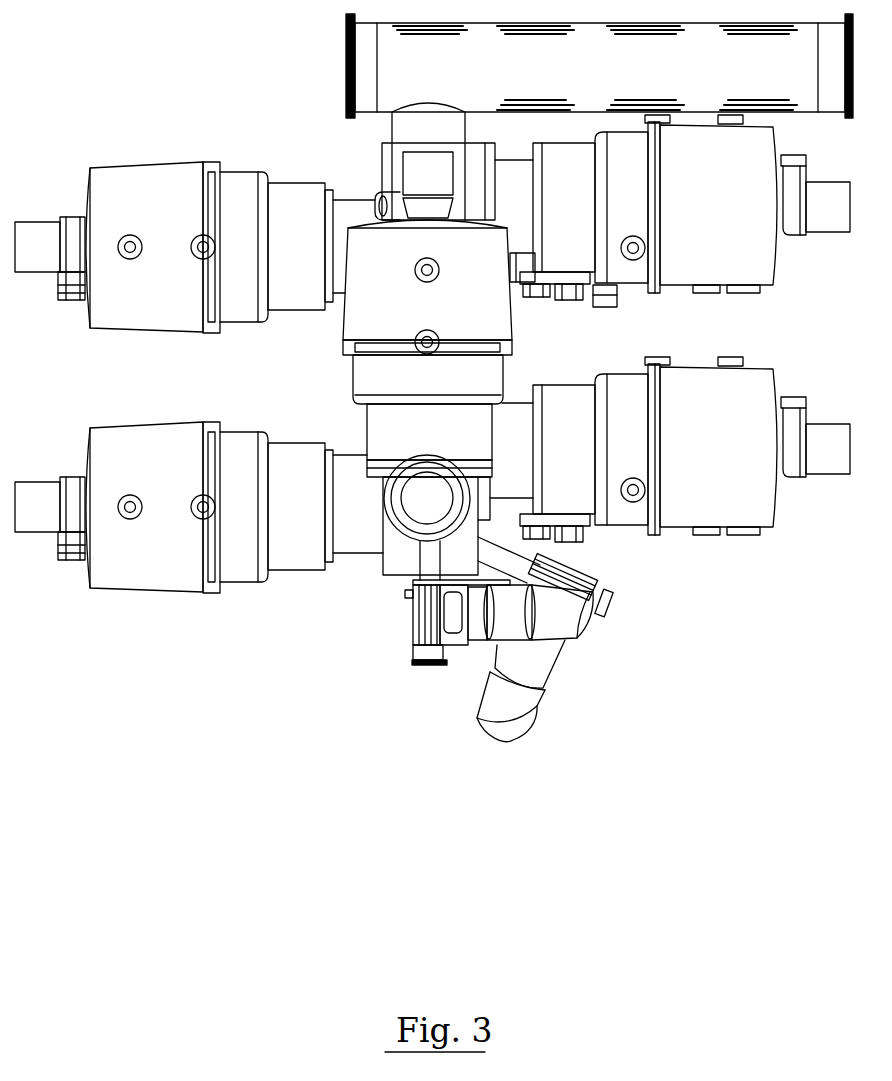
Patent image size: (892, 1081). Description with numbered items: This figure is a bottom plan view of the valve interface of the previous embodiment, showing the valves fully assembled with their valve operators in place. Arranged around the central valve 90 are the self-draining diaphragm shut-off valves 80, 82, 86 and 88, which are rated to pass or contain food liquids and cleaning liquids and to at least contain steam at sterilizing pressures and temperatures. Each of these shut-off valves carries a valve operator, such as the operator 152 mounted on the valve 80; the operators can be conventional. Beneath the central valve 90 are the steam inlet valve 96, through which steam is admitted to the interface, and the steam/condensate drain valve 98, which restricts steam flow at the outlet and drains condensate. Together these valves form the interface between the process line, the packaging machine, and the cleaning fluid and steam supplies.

The valve 80 is at (685, 230).
The valve 82 is at (174, 272).
The valve 86 is at (685, 424).
The valve 88 is at (174, 532).
The valve 90 is at (468, 344).
The steam inlet valve 96 is at (478, 663).
The steam/condensate drain valve 98 is at (568, 568).
The valve operator 152 is at (746, 219).